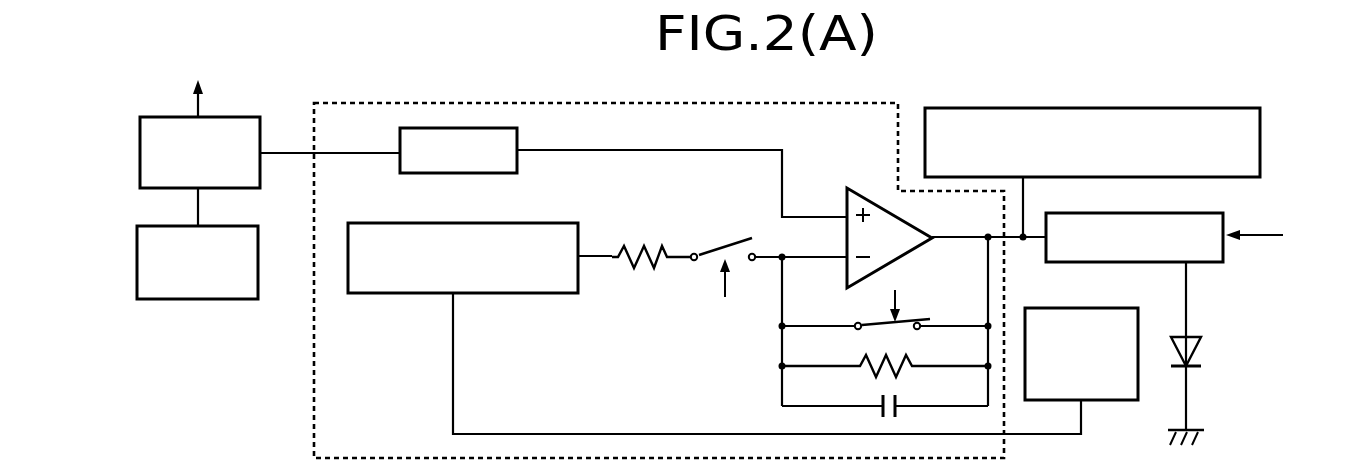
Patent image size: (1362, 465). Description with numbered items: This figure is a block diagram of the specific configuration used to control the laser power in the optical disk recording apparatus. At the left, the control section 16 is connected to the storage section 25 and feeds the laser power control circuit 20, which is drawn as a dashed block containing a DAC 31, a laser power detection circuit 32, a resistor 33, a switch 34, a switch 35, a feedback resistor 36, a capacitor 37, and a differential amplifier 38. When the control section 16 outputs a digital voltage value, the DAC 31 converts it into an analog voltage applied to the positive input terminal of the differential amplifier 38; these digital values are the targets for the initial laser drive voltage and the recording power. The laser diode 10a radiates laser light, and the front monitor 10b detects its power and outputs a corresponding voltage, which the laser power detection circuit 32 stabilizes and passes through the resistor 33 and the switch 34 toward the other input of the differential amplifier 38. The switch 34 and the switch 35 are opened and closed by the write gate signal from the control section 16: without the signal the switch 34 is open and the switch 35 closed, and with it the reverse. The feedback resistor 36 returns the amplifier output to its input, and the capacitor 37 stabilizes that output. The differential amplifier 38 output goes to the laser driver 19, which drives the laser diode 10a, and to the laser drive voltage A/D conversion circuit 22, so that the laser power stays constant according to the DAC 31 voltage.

The control section 16 is at (140, 155).
The storage section 25 is at (137, 266).
The laser power control circuit 20 is at (312, 395).
The DAC 31 is at (517, 167).
The laser power detection circuit 32 is at (400, 294).
The resistor 33 is at (637, 275).
The switch 34 is at (735, 240).
The switch 35 is at (880, 322).
The feedback resistor 36 is at (870, 353).
The capacitor 37 is at (878, 400).
The differential amplifier 38 is at (865, 190).
The laser drive voltage A/D conversion circuit 22 is at (1113, 108).
The laser driver 19 is at (1223, 222).
The front monitor 10b is at (1085, 308).
The laser diode 10a is at (1200, 350).